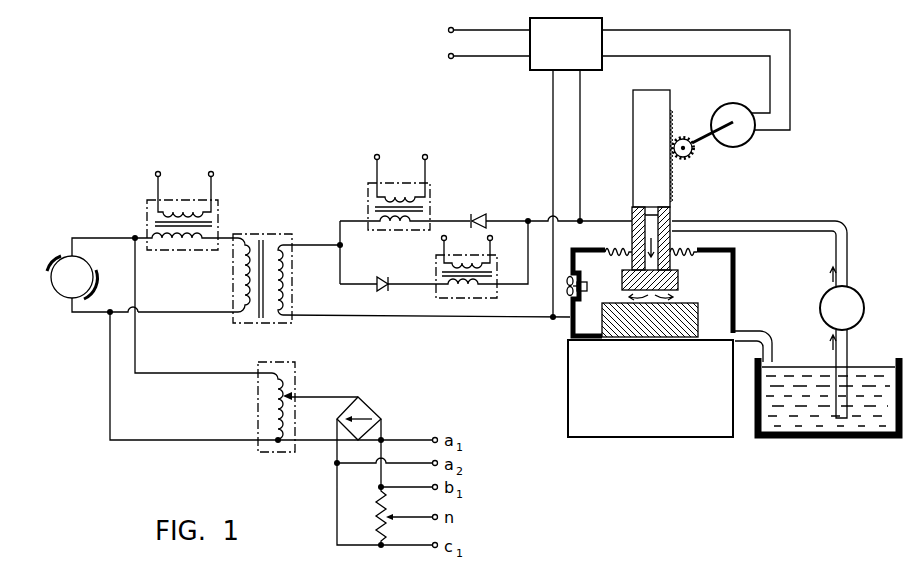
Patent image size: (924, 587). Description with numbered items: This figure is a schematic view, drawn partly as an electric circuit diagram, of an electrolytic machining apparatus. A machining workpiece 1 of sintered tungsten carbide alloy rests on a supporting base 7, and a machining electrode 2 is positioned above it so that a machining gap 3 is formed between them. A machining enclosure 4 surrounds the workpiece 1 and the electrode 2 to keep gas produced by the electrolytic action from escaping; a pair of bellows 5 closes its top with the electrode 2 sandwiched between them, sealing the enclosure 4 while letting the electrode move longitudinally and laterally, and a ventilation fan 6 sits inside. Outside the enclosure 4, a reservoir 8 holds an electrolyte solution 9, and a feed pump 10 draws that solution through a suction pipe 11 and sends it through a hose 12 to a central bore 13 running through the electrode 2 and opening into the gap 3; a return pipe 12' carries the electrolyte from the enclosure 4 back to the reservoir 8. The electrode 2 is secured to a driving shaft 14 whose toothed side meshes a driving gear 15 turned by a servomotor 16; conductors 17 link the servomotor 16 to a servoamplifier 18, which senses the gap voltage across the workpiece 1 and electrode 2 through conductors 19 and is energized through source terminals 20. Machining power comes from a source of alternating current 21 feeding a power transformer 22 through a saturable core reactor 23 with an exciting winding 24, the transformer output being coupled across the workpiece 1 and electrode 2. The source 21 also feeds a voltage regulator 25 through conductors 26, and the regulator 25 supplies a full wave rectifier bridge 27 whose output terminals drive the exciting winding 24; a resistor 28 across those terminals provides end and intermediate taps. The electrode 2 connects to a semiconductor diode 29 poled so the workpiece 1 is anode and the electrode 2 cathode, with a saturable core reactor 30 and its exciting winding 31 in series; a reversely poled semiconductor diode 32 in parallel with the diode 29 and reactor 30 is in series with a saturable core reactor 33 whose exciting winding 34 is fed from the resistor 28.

The machining workpiece 1 is at (700, 318).
The machining electrode 2 is at (680, 283).
The machining gap 3 is at (652, 298).
The machining enclosure 4 is at (567, 380).
The bellows 5 is at (603, 250).
The ventilation fan 6 is at (584, 284).
The supporting base 7 is at (640, 437).
The reservoir 8 is at (800, 438).
The electrolyte solution 9 is at (849, 428).
The feed pump 10 is at (866, 309).
The suction pipe 11 is at (847, 345).
The hose 12 is at (759, 241).
The return pipe 12' is at (760, 330).
The central bore 13 is at (633, 238).
The driving shaft 14 is at (633, 136).
The driving gear 15 is at (695, 158).
The servomotor 16 is at (734, 142).
The conductors 17 is at (713, 31).
The servoamplifier 18 is at (566, 44).
The conductors 19 is at (580, 99).
The source terminals 20 is at (449, 31).
The source of alternating current 21 is at (51, 277).
The power transformer 22 is at (281, 229).
The saturable core reactor 23 is at (139, 211).
The exciting winding 24 is at (184, 206).
The voltage regulator 25 is at (325, 366).
The conductors 26 is at (208, 439).
The full wave rectifier bridge 27 is at (396, 371).
The resistor 28 is at (370, 524).
The semiconductor diode 29 is at (483, 210).
The saturable core reactor 30 is at (364, 198).
The exciting winding 31 is at (413, 186).
The semiconductor diode 32 is at (384, 273).
The saturable core reactor 33 is at (436, 297).
The exciting winding 34 is at (497, 262).